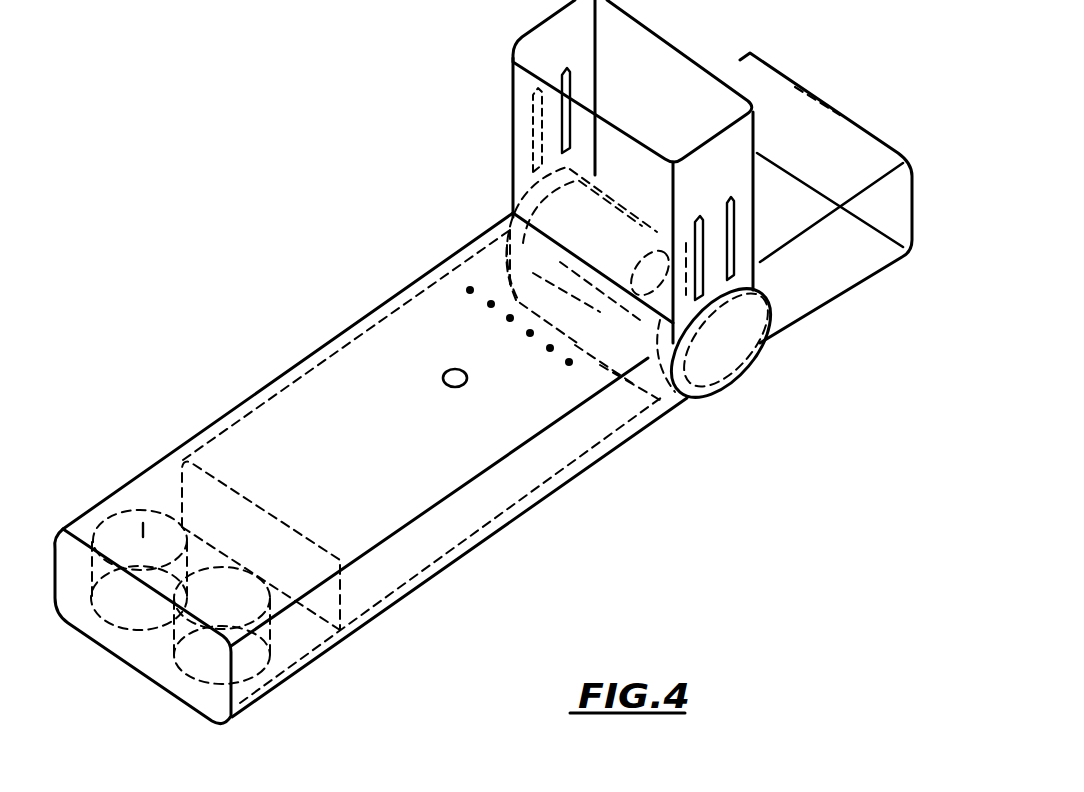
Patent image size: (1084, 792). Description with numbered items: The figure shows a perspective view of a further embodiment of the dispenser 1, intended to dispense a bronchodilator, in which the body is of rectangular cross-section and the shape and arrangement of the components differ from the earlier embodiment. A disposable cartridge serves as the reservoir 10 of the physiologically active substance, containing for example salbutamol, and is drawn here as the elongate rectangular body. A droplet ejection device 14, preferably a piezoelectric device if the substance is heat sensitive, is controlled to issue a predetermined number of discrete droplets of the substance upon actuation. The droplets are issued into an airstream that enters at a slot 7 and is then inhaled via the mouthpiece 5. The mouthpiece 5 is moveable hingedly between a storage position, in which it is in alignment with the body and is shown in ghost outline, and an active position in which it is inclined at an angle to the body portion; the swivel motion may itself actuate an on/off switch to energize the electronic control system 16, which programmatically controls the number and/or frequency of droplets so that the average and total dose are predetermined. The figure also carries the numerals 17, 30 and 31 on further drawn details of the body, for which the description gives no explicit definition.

The dispenser 1 is at (275, 366).
The mouthpiece 5 is at (662, 65).
The slot 7 is at (535, 135).
The reservoir 10 is at (397, 568).
The droplet ejection device 14 is at (612, 390).
The control circuit 16 is at (140, 512).
The compartment 17 is at (205, 668).
The apertures 30 is at (470, 288).
The opening 31 is at (453, 370).